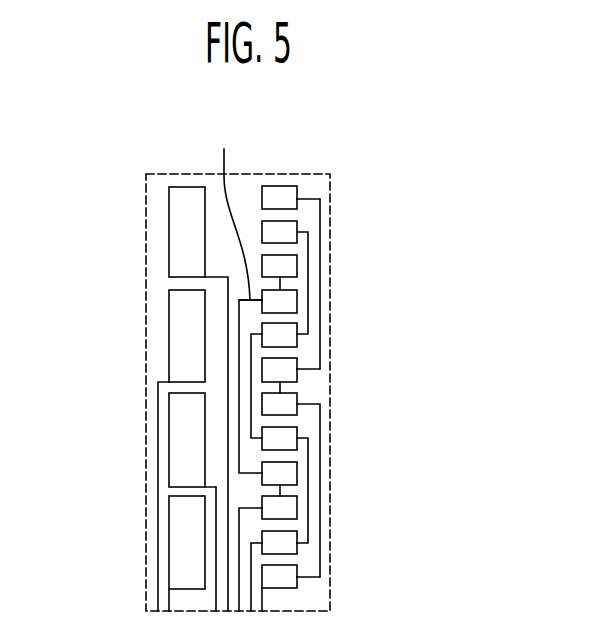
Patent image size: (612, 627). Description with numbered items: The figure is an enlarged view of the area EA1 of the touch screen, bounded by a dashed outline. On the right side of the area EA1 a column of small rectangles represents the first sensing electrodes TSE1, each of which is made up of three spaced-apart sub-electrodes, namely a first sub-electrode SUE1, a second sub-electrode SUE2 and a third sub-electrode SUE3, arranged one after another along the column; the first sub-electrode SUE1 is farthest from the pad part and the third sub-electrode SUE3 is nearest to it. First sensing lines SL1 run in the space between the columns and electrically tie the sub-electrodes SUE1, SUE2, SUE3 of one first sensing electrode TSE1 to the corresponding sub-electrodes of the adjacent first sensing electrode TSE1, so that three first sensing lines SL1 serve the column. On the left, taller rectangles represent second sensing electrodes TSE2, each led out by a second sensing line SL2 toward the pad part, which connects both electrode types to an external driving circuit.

The area EA1 is at (297, 169).
The first sensing line SL1 is at (237, 212).
The second sensing line SL2 is at (158, 414).
The first sensing electrode TSE1 is at (408, 192).
The second sensing electrode TSE2 is at (169, 231).
The first sub-electrode SUE1 is at (290, 193).
The second sub-electrode SUE2 is at (290, 229).
The third sub-electrode SUE3 is at (290, 262).